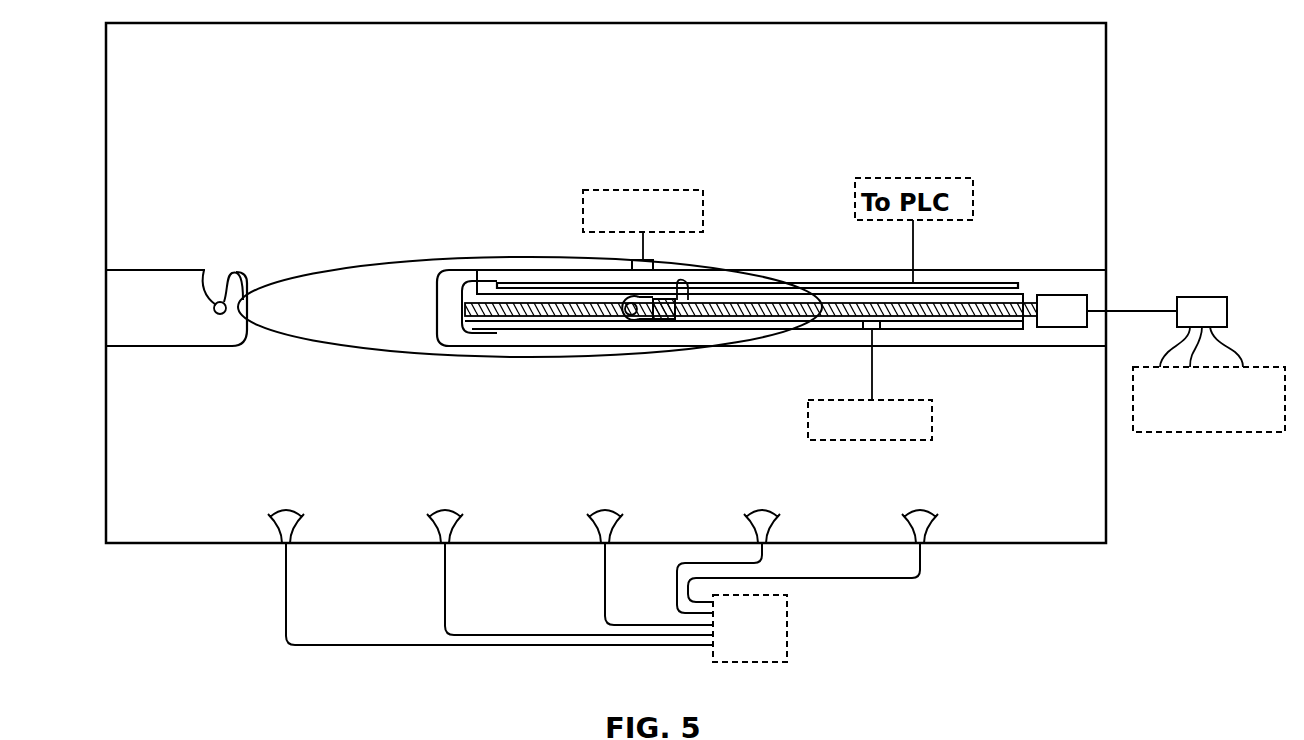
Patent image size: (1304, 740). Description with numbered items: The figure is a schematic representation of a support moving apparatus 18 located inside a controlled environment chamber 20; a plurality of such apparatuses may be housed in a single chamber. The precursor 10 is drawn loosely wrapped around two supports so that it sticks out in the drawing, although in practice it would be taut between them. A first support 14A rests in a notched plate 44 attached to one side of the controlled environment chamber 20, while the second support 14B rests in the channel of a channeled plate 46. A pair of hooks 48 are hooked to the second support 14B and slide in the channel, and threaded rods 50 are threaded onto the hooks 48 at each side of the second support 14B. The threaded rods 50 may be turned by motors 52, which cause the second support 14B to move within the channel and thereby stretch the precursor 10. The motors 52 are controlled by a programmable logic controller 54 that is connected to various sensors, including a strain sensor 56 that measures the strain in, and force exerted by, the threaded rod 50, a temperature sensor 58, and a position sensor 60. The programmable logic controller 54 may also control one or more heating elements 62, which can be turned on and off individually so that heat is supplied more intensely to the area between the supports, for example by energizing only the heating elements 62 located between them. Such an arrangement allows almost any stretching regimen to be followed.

The precursor 10 is at (348, 258).
The first support 14A is at (215, 301).
The second support 14B is at (634, 318).
The support moving apparatus 18 is at (577, 410).
The controlled environment chamber 20 is at (124, 614).
The notched plate 44 is at (170, 346).
The channeled plate 46 is at (1039, 270).
The hooks 48 is at (684, 295).
The threaded rod 50 is at (797, 303).
The motor 52 is at (1060, 327).
The programmable logic controller (PLC) 54 is at (1205, 297).
The strain sensor 56 is at (864, 328).
The temperature sensor 58 is at (632, 266).
The position sensor 60 is at (757, 283).
The heating elements 62 is at (296, 525).